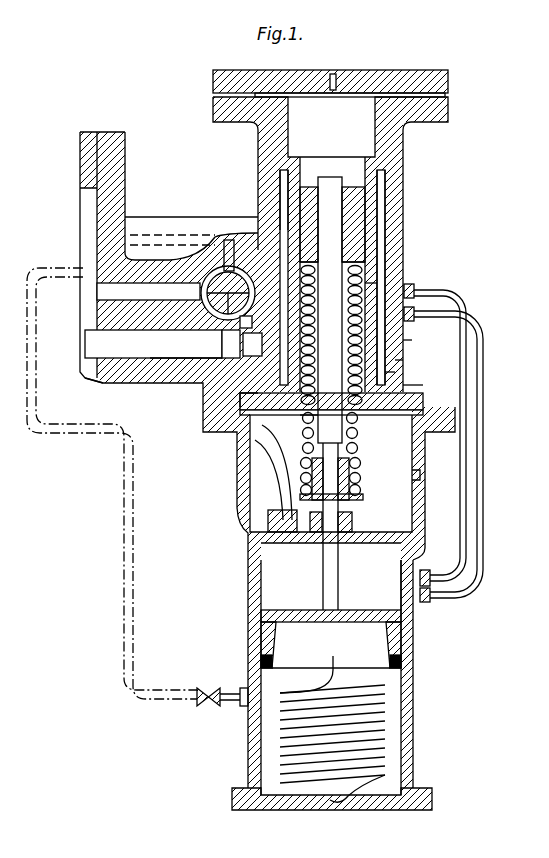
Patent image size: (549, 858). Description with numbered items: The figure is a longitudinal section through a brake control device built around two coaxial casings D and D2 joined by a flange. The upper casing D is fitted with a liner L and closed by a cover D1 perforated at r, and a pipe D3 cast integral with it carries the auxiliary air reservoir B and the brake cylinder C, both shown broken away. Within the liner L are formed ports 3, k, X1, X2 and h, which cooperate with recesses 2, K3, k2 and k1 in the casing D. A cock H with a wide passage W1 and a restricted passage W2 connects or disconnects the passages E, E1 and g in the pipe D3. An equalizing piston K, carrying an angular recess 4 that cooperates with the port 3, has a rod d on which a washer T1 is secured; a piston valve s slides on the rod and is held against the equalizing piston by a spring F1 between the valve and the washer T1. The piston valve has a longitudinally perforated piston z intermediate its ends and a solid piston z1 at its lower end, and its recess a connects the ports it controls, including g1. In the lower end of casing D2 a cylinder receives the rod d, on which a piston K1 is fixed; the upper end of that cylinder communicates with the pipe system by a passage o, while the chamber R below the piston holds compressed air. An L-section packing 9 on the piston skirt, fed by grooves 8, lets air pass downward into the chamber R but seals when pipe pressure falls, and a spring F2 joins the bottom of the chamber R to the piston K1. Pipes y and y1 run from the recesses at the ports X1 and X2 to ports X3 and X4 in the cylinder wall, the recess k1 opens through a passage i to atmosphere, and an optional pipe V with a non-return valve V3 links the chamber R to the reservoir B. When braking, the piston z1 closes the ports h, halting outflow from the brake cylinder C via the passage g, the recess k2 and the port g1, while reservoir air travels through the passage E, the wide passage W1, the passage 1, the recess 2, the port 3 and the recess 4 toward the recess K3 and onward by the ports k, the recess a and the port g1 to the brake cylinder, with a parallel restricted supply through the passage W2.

The cover D1 is at (405, 78).
The perforation r is at (337, 76).
The casing D is at (395, 150).
The liner L is at (380, 216).
The equalizing piston K is at (380, 176).
The angular recess 4 is at (375, 207).
The piston rod d is at (362, 233).
The piston valve s is at (380, 262).
The longitudinally perforated piston z is at (378, 283).
The auxiliary air reservoir B is at (82, 207).
The pipe D3 is at (170, 384).
The passage E1 is at (150, 232).
The passage E is at (100, 293).
The brake cylinder C is at (87, 346).
The wide passage W1 is at (186, 346).
The restricted passage W2 is at (232, 344).
The port k is at (252, 344).
The passage g is at (102, 382).
The cock H is at (216, 268).
The recess K3 is at (255, 323).
The port 3 is at (288, 200).
The recess 2 is at (282, 214).
The passage 1 is at (272, 243).
The ports h is at (290, 392).
The casing D2 is at (238, 505).
The passage o is at (268, 440).
The passage i is at (422, 473).
The washer T1 is at (352, 496).
The spring F1 is at (360, 440).
The solid piston z1 is at (302, 418).
The chamber R is at (403, 752).
The grooves 8 is at (261, 634).
The packing 9 is at (261, 664).
The spring F2 is at (282, 746).
The port X2 is at (416, 290).
The port X1 is at (414, 318).
The pipe y1 is at (468, 494).
The pipe y is at (485, 360).
The port X4 is at (418, 580).
The port X3 is at (430, 598).
The piston K1 is at (405, 588).
The recess k2 is at (404, 341).
The port g1 is at (397, 361).
The angular recess a is at (387, 371).
The recess k1 is at (405, 386).
The pipe V is at (125, 530).
The non-return valve V3 is at (203, 708).